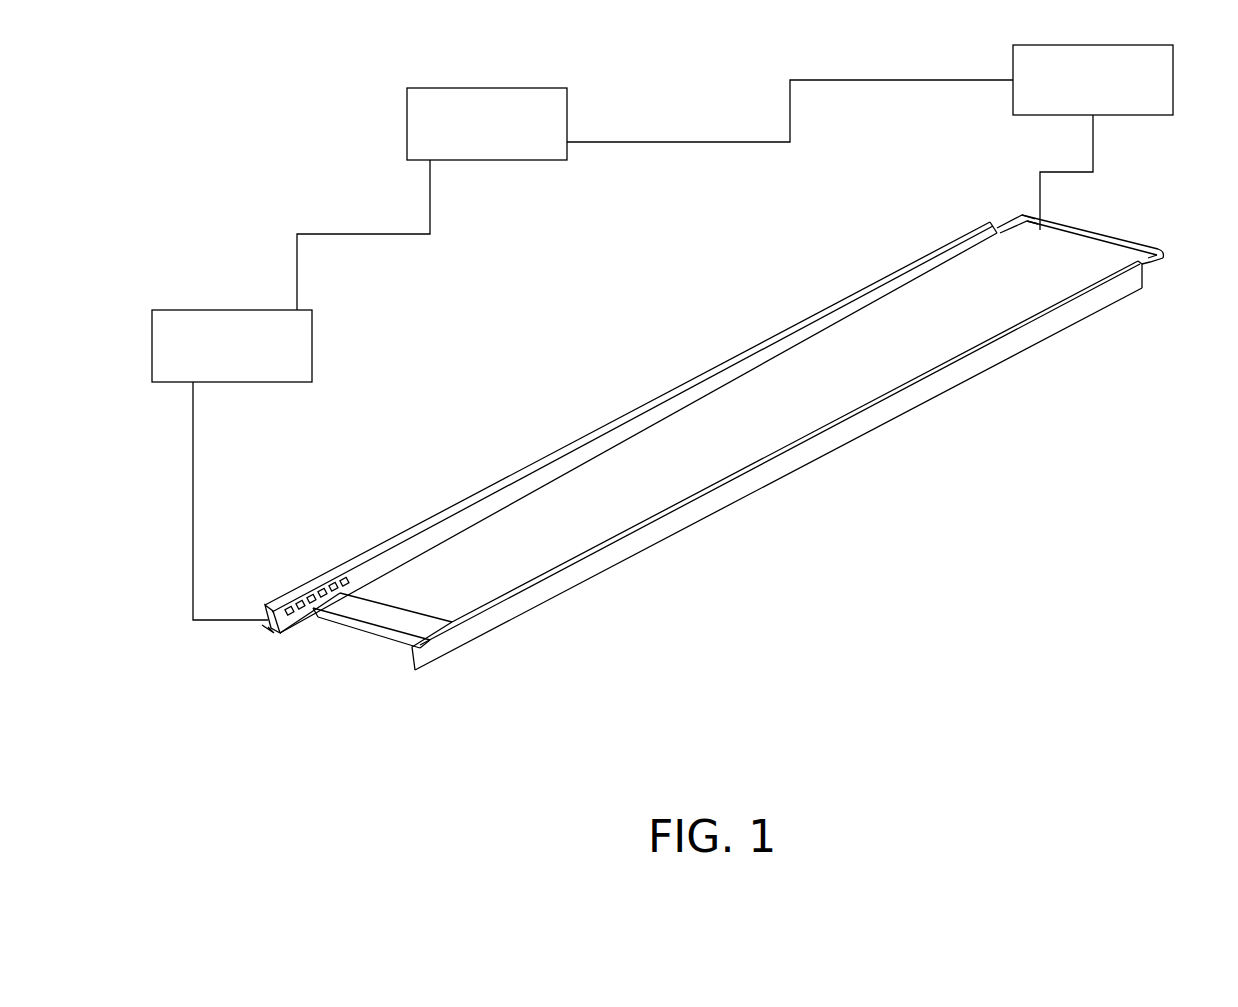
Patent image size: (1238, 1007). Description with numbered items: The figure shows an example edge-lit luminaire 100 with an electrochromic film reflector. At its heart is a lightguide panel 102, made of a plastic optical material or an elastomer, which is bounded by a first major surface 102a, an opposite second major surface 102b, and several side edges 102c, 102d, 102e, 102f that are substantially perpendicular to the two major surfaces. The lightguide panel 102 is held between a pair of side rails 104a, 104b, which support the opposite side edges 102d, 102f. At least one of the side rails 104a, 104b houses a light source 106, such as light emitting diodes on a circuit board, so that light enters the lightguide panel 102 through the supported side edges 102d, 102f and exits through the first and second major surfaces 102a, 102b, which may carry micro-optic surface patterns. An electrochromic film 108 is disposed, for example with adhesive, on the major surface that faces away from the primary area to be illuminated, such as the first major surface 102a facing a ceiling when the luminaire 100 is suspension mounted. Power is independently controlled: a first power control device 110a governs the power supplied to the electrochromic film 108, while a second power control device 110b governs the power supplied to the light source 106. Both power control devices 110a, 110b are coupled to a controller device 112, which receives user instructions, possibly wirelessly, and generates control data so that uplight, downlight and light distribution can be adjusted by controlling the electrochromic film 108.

The luminaire 100 is at (1094, 572).
The lightguide panel 102 is at (747, 452).
The first major surface 102a is at (375, 607).
The second major surface 102b is at (643, 593).
The side edge 102c is at (347, 645).
The side edge 102d is at (1152, 257).
The side edge 102e is at (1097, 228).
The side edge 102f is at (1010, 220).
The side rail 104a is at (890, 410).
The side rail 104b is at (615, 420).
The light source 106 is at (283, 613).
The electrochromic film 108 is at (483, 540).
The first power control device 110a is at (1093, 137).
The second power control device 110b is at (232, 465).
The controller device 112 is at (655, 195).